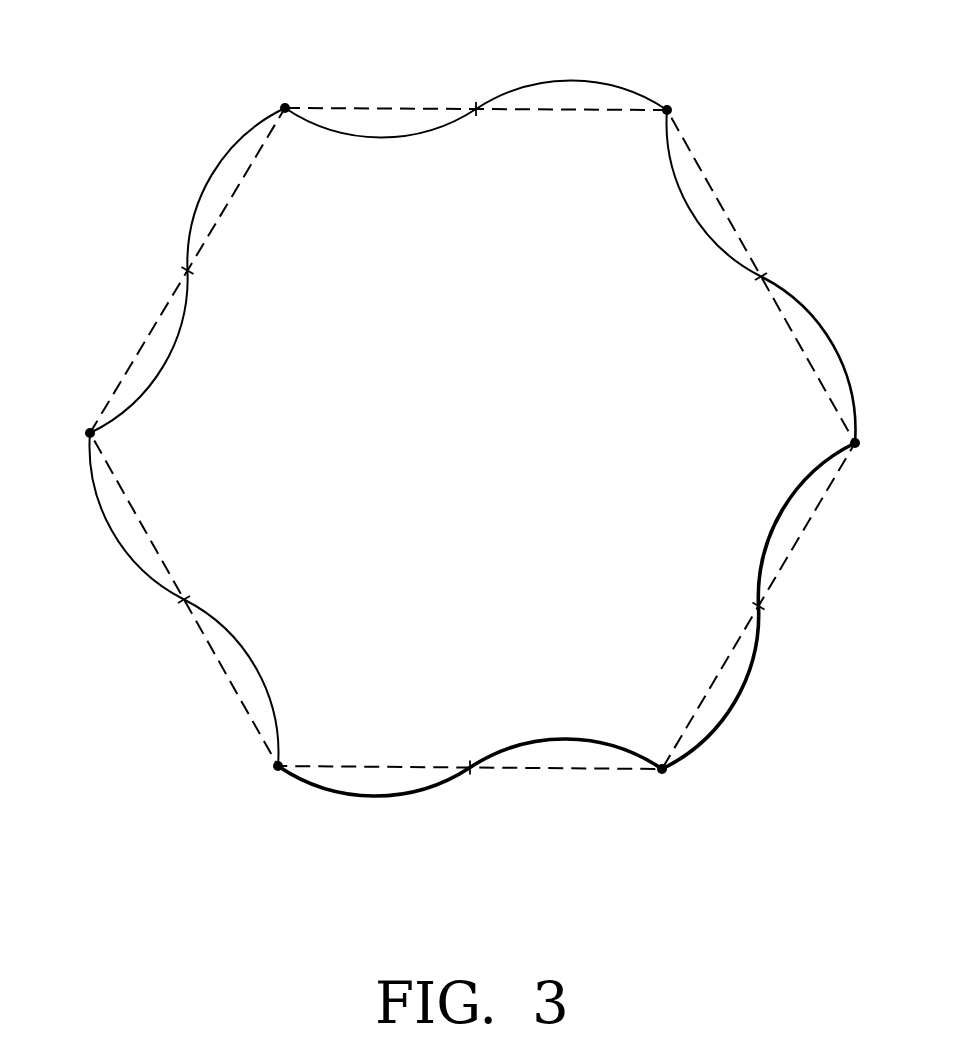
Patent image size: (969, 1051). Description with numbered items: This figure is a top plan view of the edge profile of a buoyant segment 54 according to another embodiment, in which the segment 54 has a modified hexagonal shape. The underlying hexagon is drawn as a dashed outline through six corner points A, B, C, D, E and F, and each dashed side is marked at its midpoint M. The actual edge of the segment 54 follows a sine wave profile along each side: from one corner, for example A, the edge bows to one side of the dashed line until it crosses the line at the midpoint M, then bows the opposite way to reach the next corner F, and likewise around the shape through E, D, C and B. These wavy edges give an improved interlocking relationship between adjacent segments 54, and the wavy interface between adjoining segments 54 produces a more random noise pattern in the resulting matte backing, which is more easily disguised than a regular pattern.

The buoyant segment 54 is at (575, 82).
The vertex point A of the hexagon A is at (285, 106).
The vertex point B of the hexagon B is at (88, 433).
The vertex point C of the hexagon C is at (276, 769).
The vertex point D of the hexagon D is at (664, 772).
The vertex point E of the hexagon E is at (858, 443).
The vertex point F of the hexagon F is at (669, 108).
The midpoint M of a hexagon side M is at (472, 438).